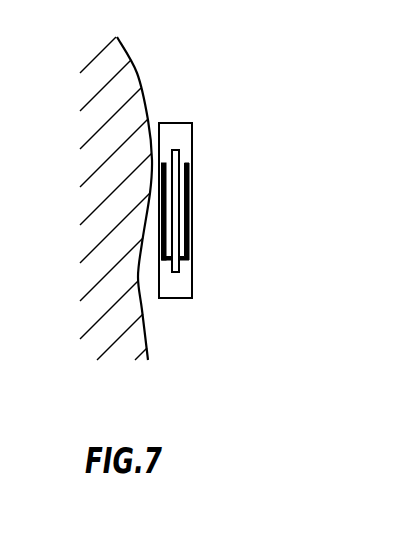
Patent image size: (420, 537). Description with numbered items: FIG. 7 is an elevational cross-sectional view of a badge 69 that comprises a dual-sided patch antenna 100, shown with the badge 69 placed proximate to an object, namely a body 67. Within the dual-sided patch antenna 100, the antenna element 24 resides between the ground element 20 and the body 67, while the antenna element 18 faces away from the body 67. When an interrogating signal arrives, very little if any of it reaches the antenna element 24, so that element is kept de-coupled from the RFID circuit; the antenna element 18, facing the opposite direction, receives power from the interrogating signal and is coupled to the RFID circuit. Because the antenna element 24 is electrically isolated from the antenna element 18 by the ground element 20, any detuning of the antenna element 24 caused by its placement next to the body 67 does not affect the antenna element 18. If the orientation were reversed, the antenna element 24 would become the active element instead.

The body 67 is at (130, 77).
The antenna element 24 is at (164, 161).
The ground element 20 is at (176, 149).
The antenna element 18 is at (184, 172).
The badge 69 is at (193, 276).
The dual-sided patch antenna 100 is at (229, 184).